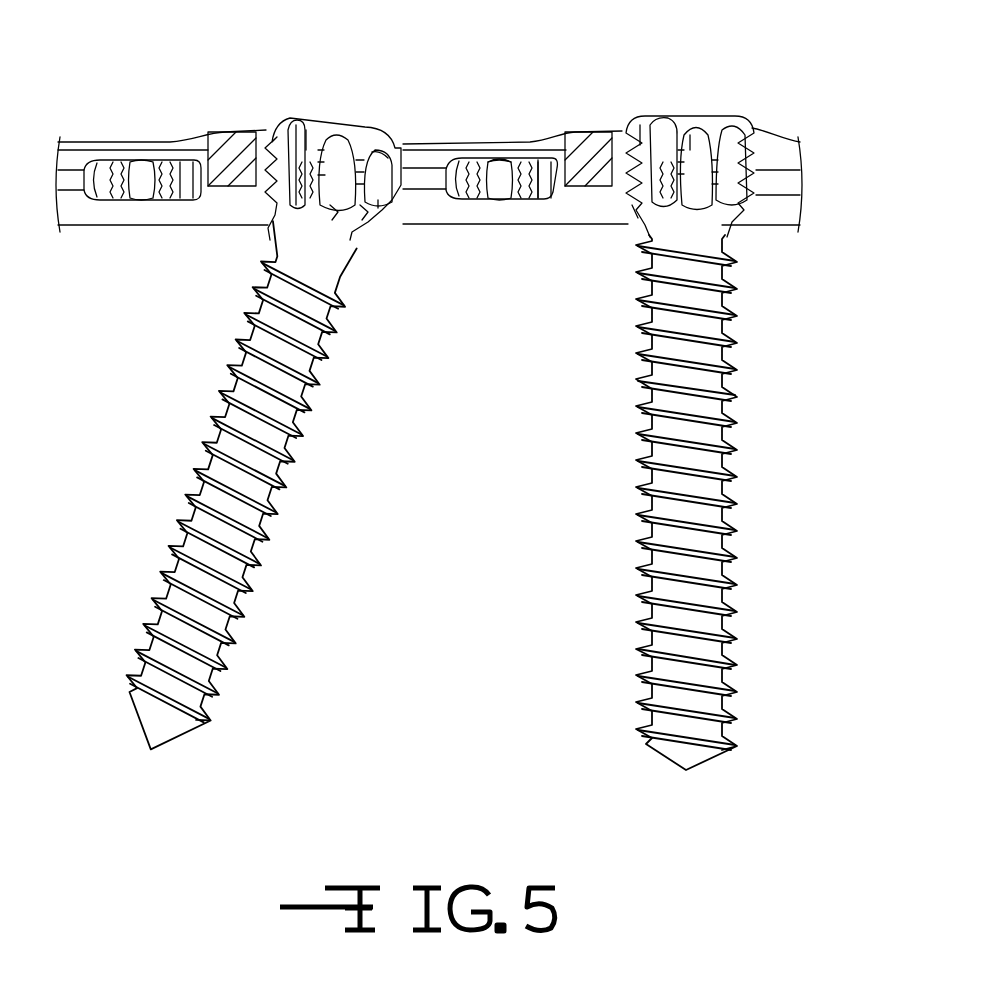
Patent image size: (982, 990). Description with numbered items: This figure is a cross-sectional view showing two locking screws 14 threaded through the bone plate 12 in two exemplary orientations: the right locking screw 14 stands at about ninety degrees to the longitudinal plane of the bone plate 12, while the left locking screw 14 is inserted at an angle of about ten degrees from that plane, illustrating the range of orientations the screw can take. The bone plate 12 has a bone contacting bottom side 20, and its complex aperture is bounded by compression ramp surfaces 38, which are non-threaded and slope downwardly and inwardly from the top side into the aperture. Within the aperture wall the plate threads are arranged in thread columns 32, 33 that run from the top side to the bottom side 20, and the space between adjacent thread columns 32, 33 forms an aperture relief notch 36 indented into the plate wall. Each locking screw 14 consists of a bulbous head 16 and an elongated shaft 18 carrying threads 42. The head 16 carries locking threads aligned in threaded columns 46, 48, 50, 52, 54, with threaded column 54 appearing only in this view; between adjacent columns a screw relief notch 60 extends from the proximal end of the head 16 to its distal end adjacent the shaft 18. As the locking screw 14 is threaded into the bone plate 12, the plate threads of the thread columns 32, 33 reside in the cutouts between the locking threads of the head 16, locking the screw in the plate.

The bone plate 12 is at (427, 150).
The locking screw 14 is at (490, 386).
The bulbous head 16 is at (326, 135).
The elongated shaft 18 is at (263, 400).
The bone contacting bottom side 20 is at (119, 235).
The thread column 32 is at (484, 143).
The thread column 33 is at (528, 140).
The aperture relief notch 36 is at (500, 186).
The compression ramp surface 38 is at (232, 134).
The shank threads 42 is at (222, 364).
The threaded column 46 is at (638, 130).
The threaded column 48 is at (632, 220).
The threaded column 50 is at (297, 138).
The threaded column 52 is at (308, 140).
The threaded column 54 is at (372, 138).
The screw relief notch 60 is at (684, 150).